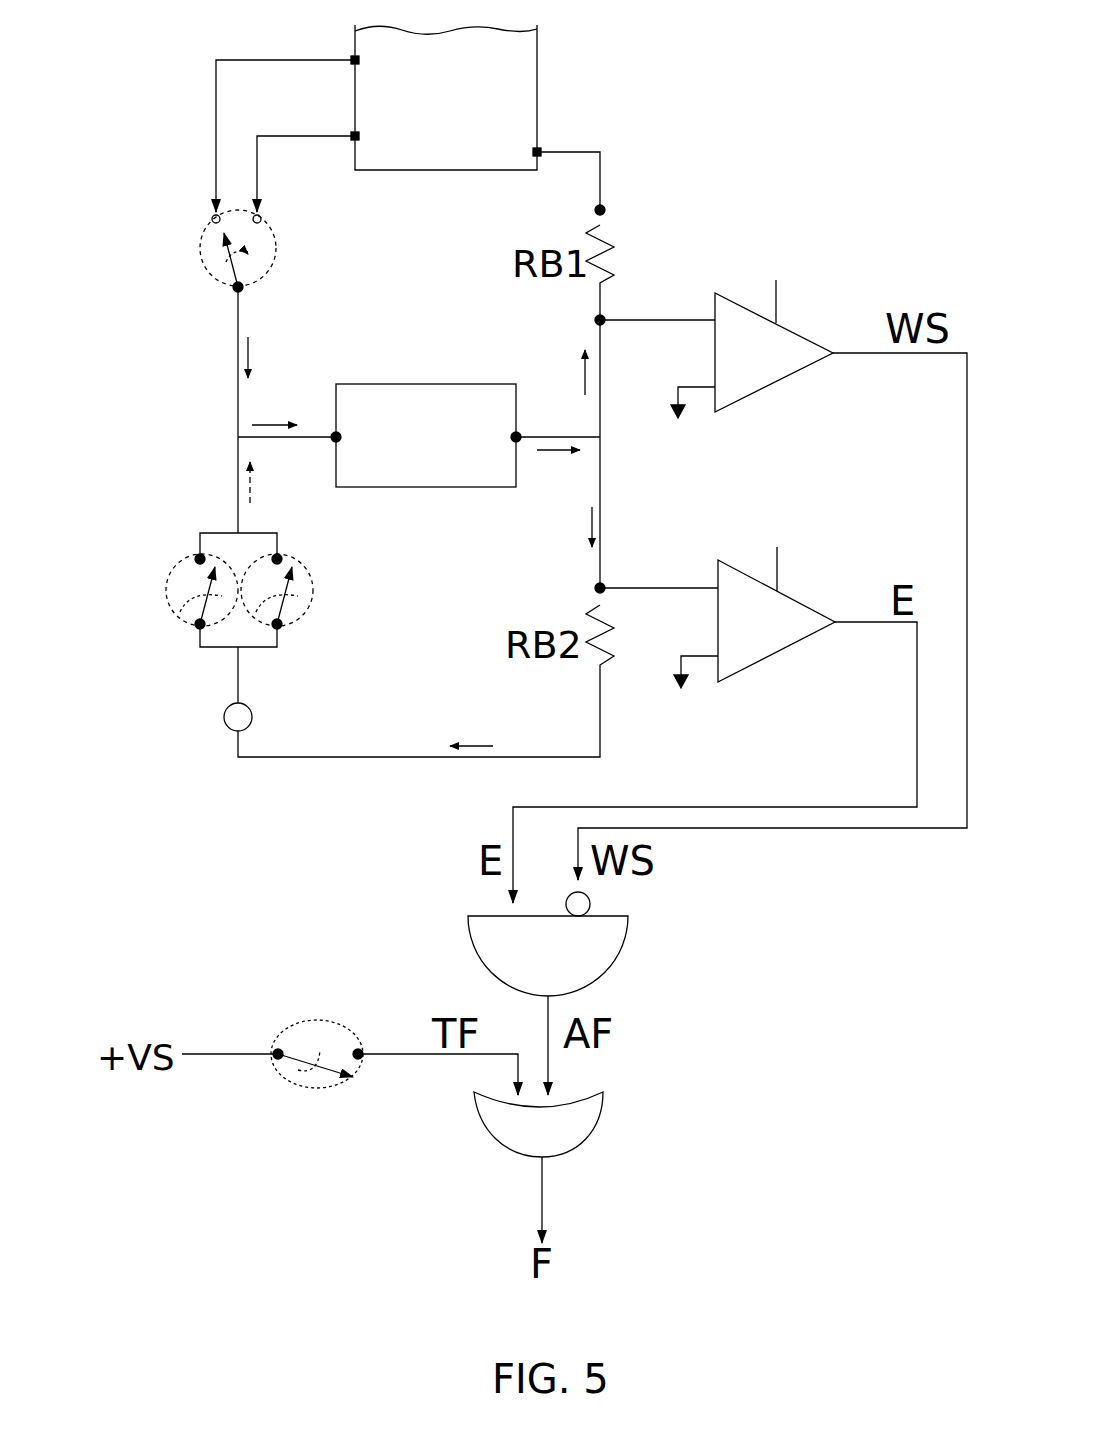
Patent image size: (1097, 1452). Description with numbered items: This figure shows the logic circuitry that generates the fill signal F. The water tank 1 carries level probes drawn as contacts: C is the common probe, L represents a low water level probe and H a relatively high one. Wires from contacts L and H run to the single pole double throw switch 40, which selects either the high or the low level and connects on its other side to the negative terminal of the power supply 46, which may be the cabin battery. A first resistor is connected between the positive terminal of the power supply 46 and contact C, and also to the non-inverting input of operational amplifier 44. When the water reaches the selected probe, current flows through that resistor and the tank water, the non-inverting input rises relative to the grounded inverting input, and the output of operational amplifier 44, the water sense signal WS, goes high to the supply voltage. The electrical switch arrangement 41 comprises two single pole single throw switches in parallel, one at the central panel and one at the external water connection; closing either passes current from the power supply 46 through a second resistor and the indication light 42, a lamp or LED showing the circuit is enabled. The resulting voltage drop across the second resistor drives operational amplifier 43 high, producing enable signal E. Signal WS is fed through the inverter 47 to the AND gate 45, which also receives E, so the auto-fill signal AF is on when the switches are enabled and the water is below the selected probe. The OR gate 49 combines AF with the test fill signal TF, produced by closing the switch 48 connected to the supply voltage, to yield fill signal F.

The water tank 1 is at (552, 85).
The single pole double throw switch 40 is at (202, 298).
The electrical switch arrangement 41 is at (167, 577).
The indication light 42 is at (222, 725).
The operational amplifier 43 is at (794, 658).
The operational amplifier 44 is at (781, 393).
The AND gate 45 is at (472, 958).
The power supply 46 is at (471, 490).
The inverter 47 is at (596, 902).
The switch 48 is at (320, 1100).
The OR gate 49 is at (600, 1127).